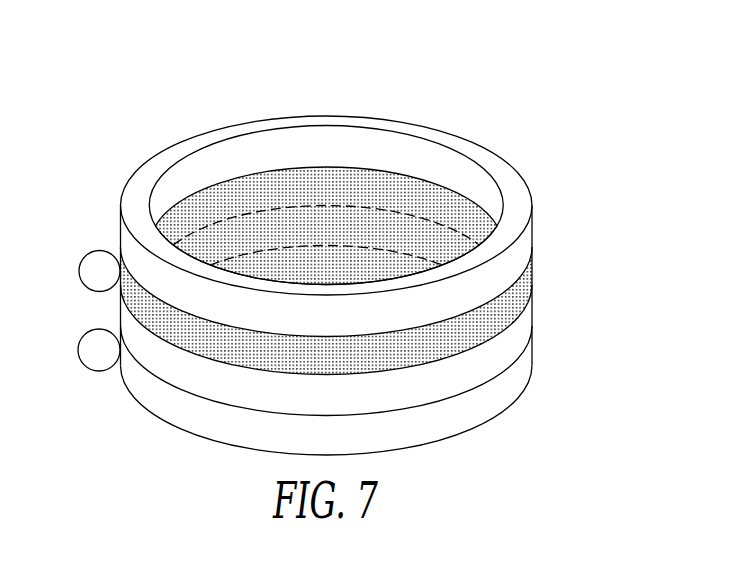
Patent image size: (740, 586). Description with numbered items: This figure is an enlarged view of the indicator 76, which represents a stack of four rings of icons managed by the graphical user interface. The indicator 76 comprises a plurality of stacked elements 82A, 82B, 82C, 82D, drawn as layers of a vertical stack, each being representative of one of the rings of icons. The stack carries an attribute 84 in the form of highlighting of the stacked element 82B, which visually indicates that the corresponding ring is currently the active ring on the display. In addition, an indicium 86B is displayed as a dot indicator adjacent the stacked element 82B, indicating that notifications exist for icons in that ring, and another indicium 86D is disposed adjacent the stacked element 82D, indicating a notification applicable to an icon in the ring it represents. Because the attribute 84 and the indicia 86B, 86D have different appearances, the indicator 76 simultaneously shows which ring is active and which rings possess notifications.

The indicator 76 is at (362, 251).
The stacked element 82A is at (526, 242).
The stacked element 82B is at (357, 364).
The stacked element 82C is at (523, 321).
The stacked element 82D is at (521, 365).
The attribute 84 is at (462, 341).
The indicium 86B is at (79, 267).
The indicium 86D is at (78, 348).